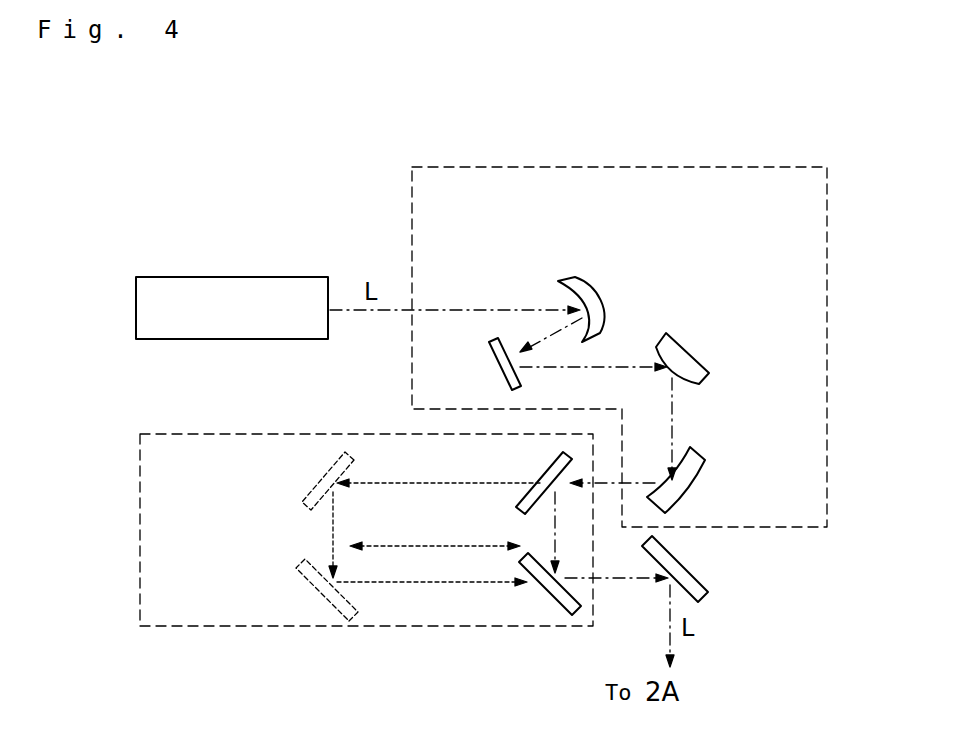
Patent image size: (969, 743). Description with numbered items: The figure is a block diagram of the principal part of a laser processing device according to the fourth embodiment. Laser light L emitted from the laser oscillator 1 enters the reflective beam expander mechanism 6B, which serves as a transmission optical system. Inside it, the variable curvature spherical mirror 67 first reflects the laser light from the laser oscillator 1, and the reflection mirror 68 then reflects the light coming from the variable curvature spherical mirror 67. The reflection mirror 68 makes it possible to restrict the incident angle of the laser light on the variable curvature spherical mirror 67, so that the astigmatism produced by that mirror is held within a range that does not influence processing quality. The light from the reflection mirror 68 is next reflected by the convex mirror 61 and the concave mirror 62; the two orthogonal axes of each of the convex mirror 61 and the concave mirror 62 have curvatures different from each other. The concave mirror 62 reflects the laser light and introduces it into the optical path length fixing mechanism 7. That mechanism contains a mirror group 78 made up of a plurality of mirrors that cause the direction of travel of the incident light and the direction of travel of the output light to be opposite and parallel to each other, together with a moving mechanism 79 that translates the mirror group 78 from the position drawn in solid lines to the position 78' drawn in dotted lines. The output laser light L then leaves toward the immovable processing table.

The laser oscillator 1 is at (225, 277).
The reflective beam expander mechanism 6B is at (827, 238).
The variable curvature spherical mirror 67 is at (573, 277).
The reflection mirror 68 is at (498, 358).
The convex mirror 61 is at (709, 364).
The concave mirror 62 is at (700, 472).
The optical path length fixing mechanism 7 is at (140, 517).
The mirror group 78 is at (515, 476).
The position of mirror group 78' is at (378, 534).
The moving mechanism 79 is at (455, 545).